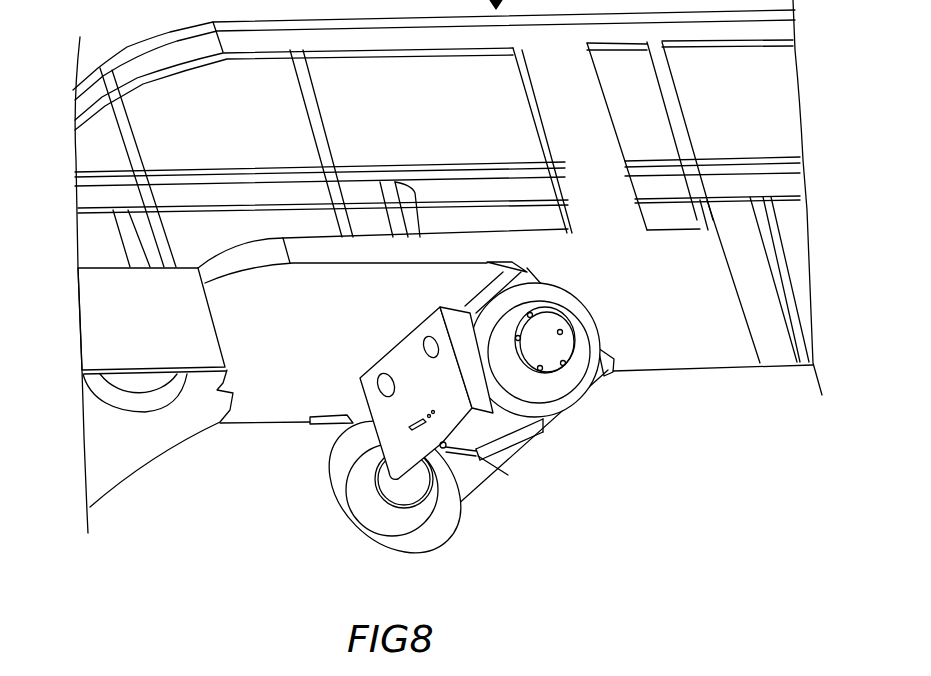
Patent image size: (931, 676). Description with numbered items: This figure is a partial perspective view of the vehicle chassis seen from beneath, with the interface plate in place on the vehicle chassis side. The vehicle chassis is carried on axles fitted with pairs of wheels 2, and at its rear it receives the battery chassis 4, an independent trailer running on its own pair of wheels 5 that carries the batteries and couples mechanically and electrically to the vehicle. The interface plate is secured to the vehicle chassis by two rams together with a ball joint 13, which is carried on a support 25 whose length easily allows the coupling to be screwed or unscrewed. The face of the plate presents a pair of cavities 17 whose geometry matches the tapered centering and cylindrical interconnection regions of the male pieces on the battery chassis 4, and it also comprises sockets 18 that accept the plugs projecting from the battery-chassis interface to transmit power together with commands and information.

The wheels 2 is at (433, 513).
The battery chassis 4 is at (193, 322).
The wheels 5 is at (135, 400).
The ball joint 13 is at (452, 458).
The cavities 17 is at (426, 345).
The sockets 18 is at (362, 454).
The support 25 is at (467, 463).